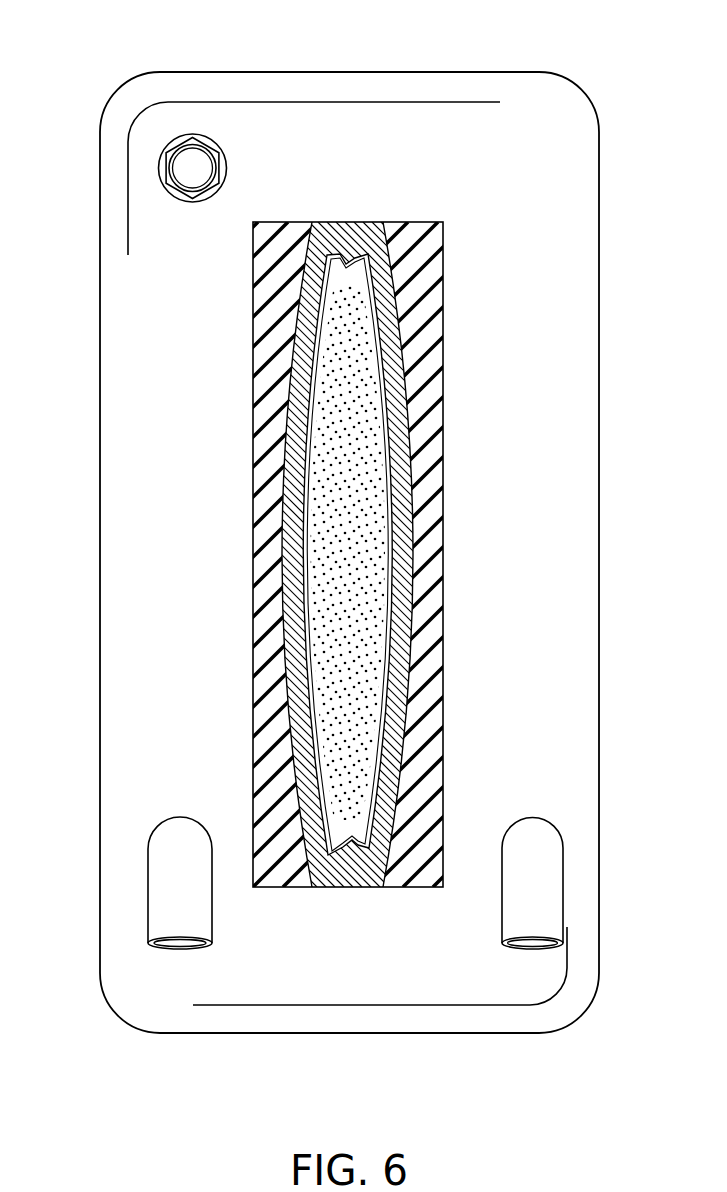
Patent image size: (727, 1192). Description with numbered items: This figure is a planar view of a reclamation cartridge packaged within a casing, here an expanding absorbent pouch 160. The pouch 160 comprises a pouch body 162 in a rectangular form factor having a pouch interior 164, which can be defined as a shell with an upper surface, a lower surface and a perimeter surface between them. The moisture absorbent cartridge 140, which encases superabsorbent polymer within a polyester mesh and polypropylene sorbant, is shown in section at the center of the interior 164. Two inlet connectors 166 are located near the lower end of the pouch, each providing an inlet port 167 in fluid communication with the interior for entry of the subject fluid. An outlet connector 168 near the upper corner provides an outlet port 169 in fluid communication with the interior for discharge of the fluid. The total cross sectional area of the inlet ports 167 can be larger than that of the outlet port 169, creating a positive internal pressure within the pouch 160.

The expanding absorbent pouch 160 is at (352, 523).
The pouch body 162 is at (599, 140).
The pouch interior 164 is at (513, 140).
The inlet connector 166 is at (361, 919).
The inlet port 167 is at (175, 962).
The outlet connector 168 is at (159, 181).
The outlet port 169 is at (182, 165).
The moisture absorbent cartridge 140 is at (463, 258).